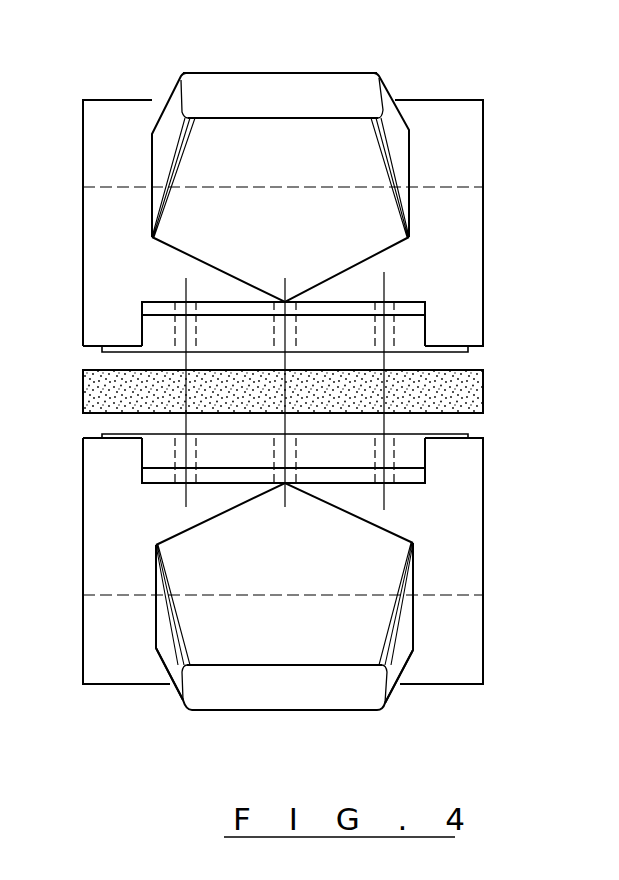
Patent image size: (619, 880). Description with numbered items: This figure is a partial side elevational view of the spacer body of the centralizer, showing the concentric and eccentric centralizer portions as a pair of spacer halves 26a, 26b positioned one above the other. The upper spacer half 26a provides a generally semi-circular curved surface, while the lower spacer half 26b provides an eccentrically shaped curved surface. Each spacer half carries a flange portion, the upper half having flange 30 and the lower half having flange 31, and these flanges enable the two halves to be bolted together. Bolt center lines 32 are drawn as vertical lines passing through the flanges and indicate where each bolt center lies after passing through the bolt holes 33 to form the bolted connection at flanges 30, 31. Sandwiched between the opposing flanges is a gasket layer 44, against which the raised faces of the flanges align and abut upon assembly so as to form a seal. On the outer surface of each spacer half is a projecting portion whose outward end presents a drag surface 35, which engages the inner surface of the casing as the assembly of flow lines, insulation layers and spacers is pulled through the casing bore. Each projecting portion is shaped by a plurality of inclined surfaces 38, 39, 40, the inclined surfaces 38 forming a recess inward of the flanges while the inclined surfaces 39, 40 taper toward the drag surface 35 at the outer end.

The spacer half 26a is at (483, 128).
The spacer half 26b is at (483, 640).
The flange portion 30 is at (410, 302).
The flange portion 31 is at (408, 485).
The bolt center line 32 is at (384, 282).
The bolt hole 33 is at (173, 330).
The drag surface 35 is at (288, 80).
The inclined surface 38 is at (297, 240).
The inclined surface 39 is at (177, 663).
The inclined surface 40 is at (393, 660).
The gasket layer 44 is at (483, 392).